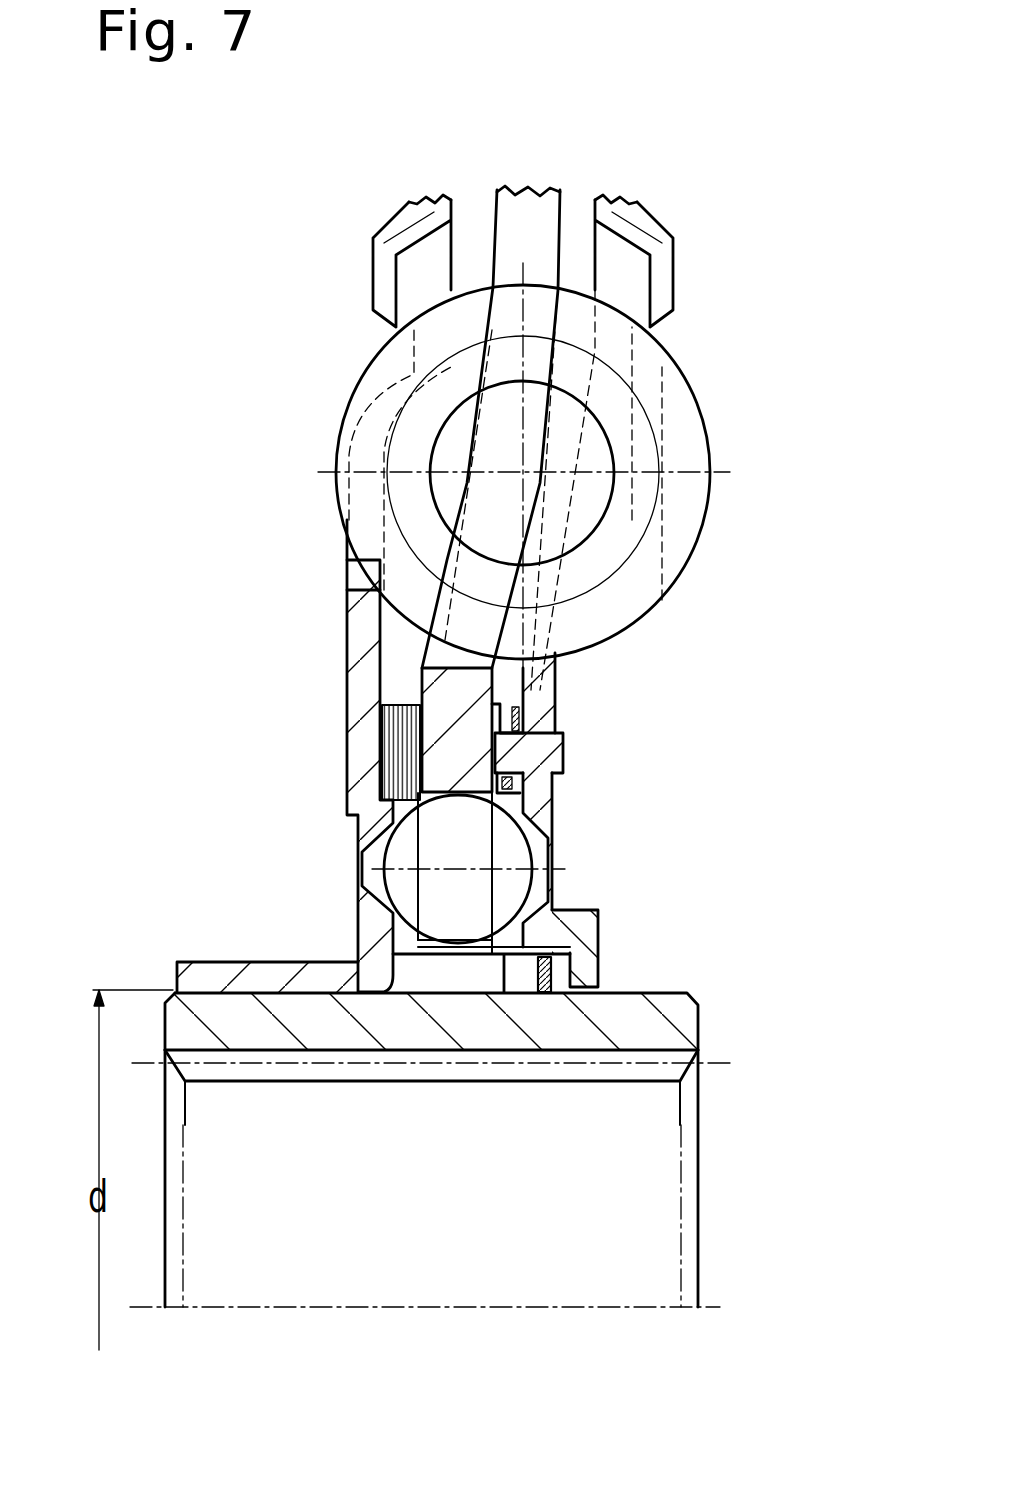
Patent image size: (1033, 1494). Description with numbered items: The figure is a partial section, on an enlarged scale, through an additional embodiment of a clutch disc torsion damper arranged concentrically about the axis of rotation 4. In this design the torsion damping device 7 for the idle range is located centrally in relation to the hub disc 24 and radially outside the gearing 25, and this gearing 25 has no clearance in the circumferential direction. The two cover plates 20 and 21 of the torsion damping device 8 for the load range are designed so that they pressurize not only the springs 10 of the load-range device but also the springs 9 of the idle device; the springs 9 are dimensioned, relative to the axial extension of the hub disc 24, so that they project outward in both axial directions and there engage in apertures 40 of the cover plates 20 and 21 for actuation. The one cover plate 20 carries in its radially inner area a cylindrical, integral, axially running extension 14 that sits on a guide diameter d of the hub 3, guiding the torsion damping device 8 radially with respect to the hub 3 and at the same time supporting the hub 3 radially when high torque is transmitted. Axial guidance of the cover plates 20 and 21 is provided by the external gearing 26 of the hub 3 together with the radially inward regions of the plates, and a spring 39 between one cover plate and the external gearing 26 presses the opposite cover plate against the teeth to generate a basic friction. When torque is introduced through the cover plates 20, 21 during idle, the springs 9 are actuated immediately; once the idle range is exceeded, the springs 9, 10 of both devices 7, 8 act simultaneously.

The hub 3 is at (655, 1040).
The axis of rotation 4 is at (415, 1307).
The torsion damping device 7 is at (594, 852).
The torsion damping device 8 is at (752, 412).
The springs 9 is at (362, 860).
The springs 10 is at (668, 580).
The extension 14 is at (200, 972).
The cover plate 20 is at (363, 625).
The cover plate 21 is at (543, 705).
The hub disc 24 is at (537, 207).
The gearing 25 is at (500, 942).
The external gearing 26 is at (443, 978).
The spring 39 is at (575, 973).
The apertures 40 is at (538, 858).